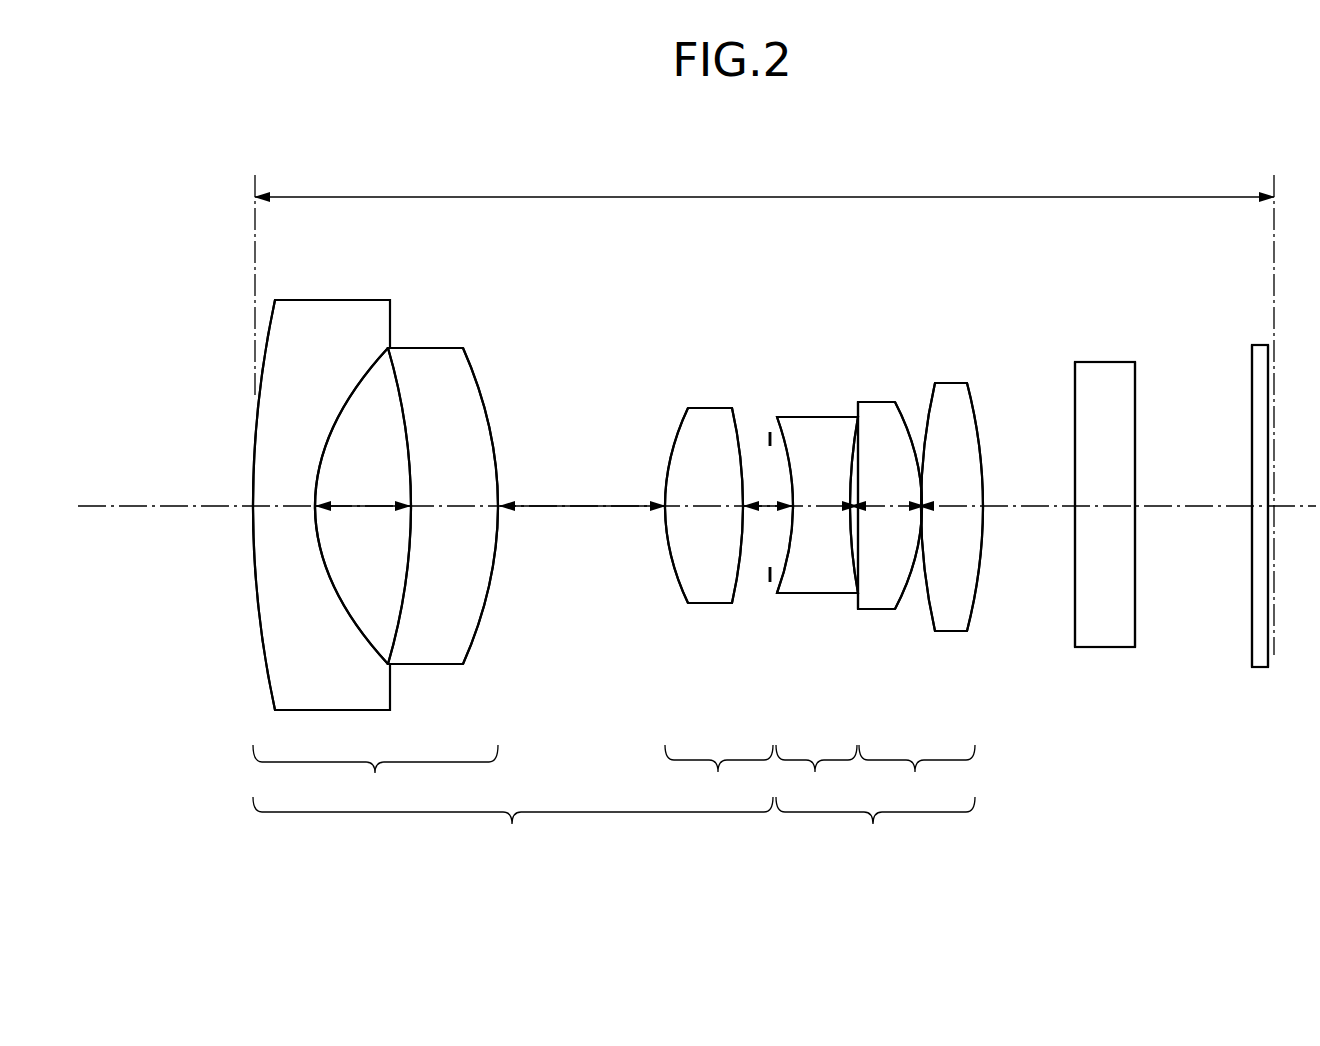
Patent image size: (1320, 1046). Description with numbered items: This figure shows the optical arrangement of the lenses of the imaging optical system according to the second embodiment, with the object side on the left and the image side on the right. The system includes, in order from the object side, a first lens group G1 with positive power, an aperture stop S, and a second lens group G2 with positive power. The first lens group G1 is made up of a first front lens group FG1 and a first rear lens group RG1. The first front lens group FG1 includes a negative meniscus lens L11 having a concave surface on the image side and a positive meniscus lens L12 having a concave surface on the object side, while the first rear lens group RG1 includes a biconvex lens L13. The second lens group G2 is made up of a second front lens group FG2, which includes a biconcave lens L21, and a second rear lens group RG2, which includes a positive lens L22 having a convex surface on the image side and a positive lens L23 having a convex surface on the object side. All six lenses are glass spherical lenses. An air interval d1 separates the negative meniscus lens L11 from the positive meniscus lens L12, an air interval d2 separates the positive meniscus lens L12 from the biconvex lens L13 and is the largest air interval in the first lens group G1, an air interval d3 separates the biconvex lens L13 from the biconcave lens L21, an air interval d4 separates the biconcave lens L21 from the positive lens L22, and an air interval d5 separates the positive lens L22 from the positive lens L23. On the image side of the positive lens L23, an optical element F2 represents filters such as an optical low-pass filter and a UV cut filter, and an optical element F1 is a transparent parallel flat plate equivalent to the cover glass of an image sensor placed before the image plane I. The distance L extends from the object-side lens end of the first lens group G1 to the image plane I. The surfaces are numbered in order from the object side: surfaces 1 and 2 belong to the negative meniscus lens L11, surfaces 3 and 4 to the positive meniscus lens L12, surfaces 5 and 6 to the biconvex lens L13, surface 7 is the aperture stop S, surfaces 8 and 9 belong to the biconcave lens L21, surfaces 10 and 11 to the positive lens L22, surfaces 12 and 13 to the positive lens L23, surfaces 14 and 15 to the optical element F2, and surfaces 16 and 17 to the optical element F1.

The surface number 1 is at (265, 650).
The surface number 2 is at (355, 622).
The surface number 3 is at (400, 592).
The surface number 4 is at (487, 602).
The surface number 5 is at (675, 577).
The surface number 6 is at (737, 580).
The surface number 7 is at (768, 583).
The surface number 8 is at (784, 572).
The surface number 9 is at (856, 566).
The surface number 10 is at (858, 612).
The surface number 11 is at (903, 575).
The surface number 12 is at (921, 600).
The surface number 13 is at (982, 585).
The surface number 14 is at (1075, 615).
The surface number 15 is at (1135, 615).
The surface number 16 is at (1252, 615).
The surface number 17 is at (1268, 640).
The distance L is at (742, 197).
The negative meniscus lens L11 is at (337, 300).
The positive meniscus lens L12 is at (441, 350).
The biconvex lens L13 is at (708, 420).
The aperture stop S is at (766, 432).
The biconcave lens L21 is at (795, 425).
The positive lens L22 is at (872, 410).
The positive lens L23 is at (948, 395).
The optical element F2 is at (1098, 362).
The optical element F1 is at (1262, 345).
The image plane I is at (1277, 378).
The air interval d1 is at (362, 504).
The air interval d2 is at (583, 504).
The air interval d3 is at (770, 504).
The air interval d4 is at (850, 498).
The air interval d5 is at (918, 497).
The first front lens group FG1 is at (375, 778).
The first rear lens group RG1 is at (719, 778).
The second front lens group FG2 is at (816, 778).
The second rear lens group RG2 is at (917, 778).
The first lens group G1 is at (513, 831).
The second lens group G2 is at (875, 831).